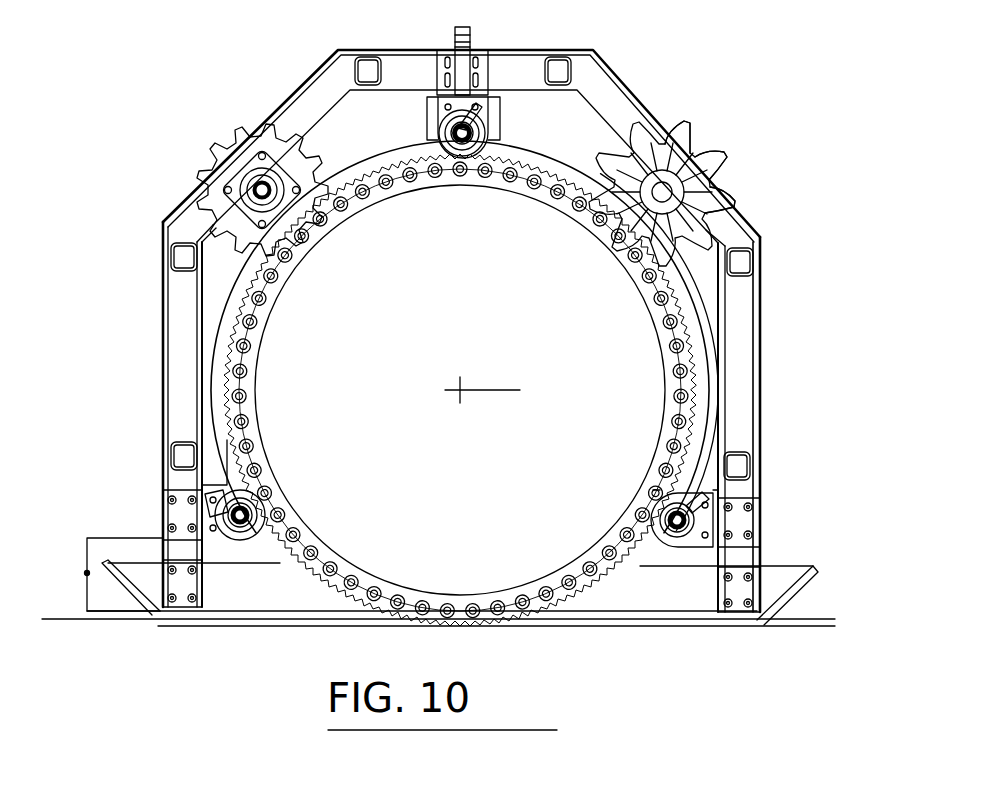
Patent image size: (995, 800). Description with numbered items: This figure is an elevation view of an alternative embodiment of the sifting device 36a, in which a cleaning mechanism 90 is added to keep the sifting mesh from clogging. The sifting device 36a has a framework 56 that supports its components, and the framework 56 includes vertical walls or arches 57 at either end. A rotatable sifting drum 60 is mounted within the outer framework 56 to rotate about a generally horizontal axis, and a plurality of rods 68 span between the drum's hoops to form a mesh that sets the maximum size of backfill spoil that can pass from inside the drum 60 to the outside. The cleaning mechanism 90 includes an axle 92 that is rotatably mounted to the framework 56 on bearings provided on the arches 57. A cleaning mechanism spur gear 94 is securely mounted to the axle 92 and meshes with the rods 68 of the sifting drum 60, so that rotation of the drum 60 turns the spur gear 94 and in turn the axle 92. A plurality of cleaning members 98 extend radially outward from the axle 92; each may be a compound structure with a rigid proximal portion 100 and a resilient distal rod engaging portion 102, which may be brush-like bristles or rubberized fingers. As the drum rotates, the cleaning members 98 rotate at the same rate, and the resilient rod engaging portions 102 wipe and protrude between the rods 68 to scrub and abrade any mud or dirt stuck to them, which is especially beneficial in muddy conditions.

The sifting device 36a is at (306, 69).
The framework 56 is at (708, 290).
The arches 57 is at (743, 378).
The sifting drum 60 is at (227, 302).
The rods 68 is at (512, 181).
The cleaning mechanism 90 is at (660, 82).
The axle 92 is at (663, 188).
The cleaning mechanism spur gear 94 is at (707, 165).
The cleaning members 98 is at (692, 125).
The rigid proximal portion 100 is at (608, 187).
The resilient distal rod engaging portion 102 is at (720, 176).